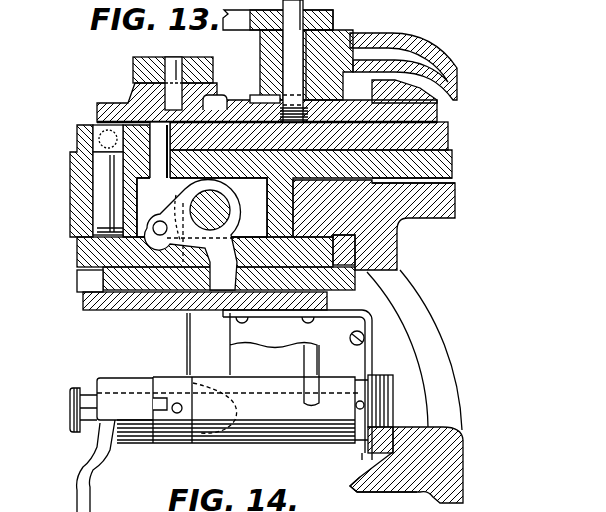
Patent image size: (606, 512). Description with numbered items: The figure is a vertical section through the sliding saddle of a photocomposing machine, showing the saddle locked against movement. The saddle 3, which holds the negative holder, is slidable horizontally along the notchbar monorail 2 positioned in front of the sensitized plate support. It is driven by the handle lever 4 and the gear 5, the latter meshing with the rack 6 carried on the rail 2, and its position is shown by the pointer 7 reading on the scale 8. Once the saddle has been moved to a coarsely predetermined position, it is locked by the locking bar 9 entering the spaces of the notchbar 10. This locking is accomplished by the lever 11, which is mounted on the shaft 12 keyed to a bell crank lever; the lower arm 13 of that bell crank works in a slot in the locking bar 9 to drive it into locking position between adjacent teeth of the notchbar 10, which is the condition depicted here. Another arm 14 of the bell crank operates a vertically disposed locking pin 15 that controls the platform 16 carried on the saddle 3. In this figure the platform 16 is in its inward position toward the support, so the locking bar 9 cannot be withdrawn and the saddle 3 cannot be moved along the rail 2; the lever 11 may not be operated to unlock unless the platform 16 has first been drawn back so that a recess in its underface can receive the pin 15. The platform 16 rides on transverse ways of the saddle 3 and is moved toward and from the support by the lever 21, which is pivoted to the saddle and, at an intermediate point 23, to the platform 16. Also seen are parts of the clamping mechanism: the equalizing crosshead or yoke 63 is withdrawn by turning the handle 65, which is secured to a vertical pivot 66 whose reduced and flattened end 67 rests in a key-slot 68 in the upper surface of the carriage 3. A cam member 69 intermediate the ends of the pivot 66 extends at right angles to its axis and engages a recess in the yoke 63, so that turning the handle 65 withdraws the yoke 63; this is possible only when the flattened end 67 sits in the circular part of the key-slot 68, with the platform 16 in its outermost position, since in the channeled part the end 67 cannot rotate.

The notchbar monorail 2 is at (450, 473).
The saddle 3 is at (443, 198).
The handle lever 4 is at (75, 500).
The gear 5 is at (392, 397).
The rack 6 is at (385, 455).
The pointer 7 is at (367, 442).
The scale 8 is at (358, 477).
The locking bar 9 is at (103, 279).
The notchbar 10 is at (347, 252).
The lever 11 is at (197, 348).
The shaft 12 is at (212, 213).
The lower arm 13 is at (188, 312).
The arm 14 is at (155, 230).
The locking pin 15 is at (158, 170).
The platform 16 is at (97, 113).
The lever 21 is at (133, 72).
The intermediate point 23 is at (170, 57).
The equalizing crosshead or yoke 63 is at (237, 93).
The handle 65 is at (223, 28).
The vertical pivot 66 is at (277, 103).
The reduced and flattened end 67 is at (300, 127).
The key-slot 68 is at (300, 82).
The cam member 69 is at (262, 99).